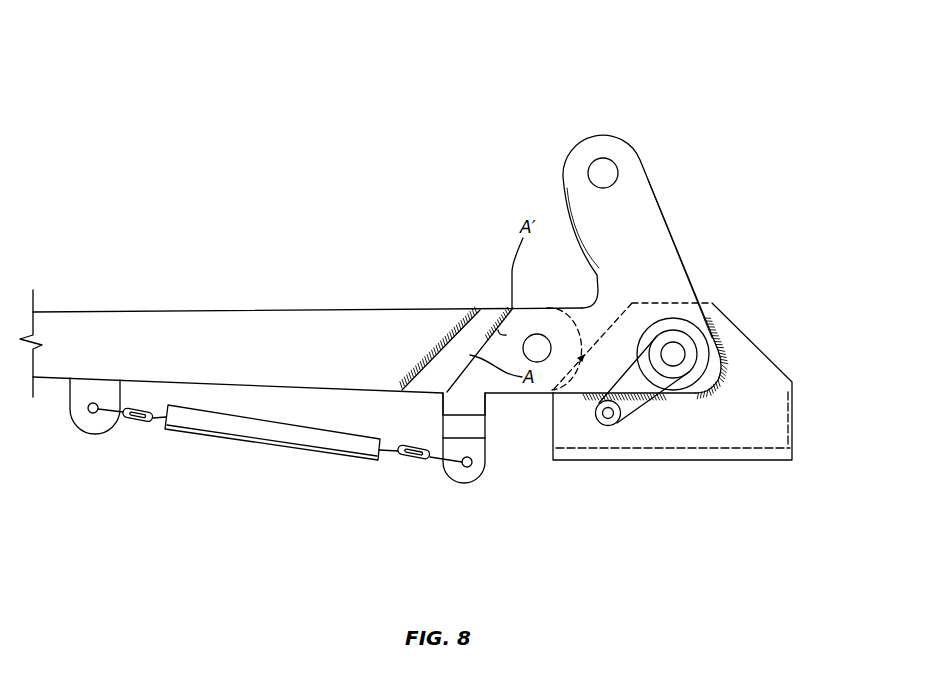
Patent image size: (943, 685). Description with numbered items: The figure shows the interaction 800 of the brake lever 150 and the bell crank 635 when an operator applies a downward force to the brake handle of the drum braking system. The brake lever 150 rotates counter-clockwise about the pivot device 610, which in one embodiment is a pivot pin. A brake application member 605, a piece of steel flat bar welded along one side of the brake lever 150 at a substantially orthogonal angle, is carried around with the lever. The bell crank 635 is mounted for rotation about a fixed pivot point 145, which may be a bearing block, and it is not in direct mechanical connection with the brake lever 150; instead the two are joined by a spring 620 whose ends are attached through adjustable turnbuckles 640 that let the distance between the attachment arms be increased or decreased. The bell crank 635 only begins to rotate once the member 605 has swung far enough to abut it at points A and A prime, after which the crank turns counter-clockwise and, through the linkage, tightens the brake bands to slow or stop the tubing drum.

The interaction 800 is at (747, 62).
The brake lever 150 is at (217, 310).
The brake application member 605 is at (498, 308).
The pivot device 610 is at (537, 333).
The bell crank 635 is at (677, 244).
The fixed pivot point 145 is at (680, 352).
The spring 620 is at (275, 448).
The adjustable turnbuckles 640 is at (137, 422).